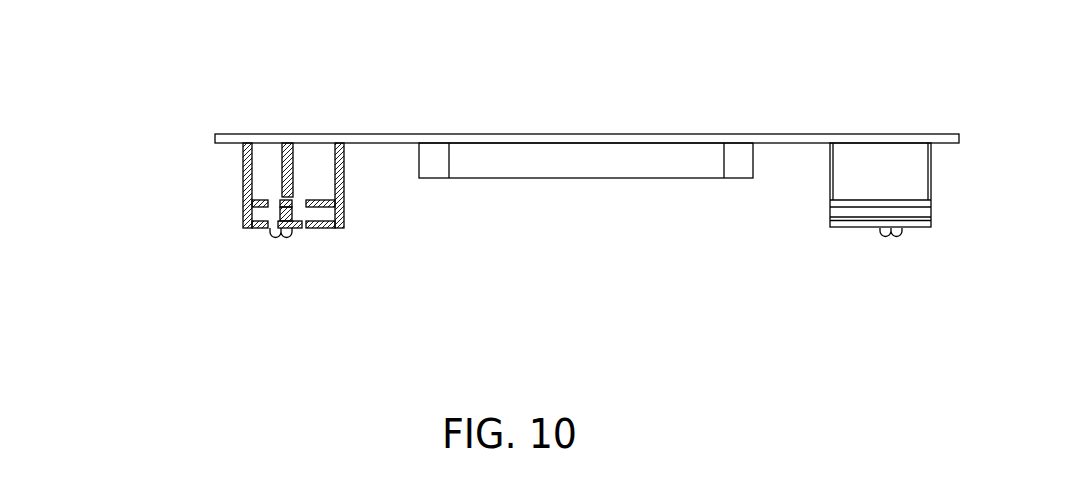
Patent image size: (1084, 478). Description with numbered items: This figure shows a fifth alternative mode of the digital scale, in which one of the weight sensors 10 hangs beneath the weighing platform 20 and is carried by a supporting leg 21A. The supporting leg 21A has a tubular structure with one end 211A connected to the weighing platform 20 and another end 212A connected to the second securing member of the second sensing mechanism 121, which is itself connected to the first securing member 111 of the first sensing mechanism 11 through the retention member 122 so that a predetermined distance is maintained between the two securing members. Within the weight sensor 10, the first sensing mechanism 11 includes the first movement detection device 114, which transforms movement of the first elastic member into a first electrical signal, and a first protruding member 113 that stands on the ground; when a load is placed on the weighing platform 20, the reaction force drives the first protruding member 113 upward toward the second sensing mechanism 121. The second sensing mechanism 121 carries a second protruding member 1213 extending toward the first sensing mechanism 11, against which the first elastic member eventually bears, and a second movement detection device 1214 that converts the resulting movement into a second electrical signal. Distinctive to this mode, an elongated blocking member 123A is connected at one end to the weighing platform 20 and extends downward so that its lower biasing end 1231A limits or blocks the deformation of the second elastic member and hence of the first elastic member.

The weight sensor 10 is at (291, 259).
The first sensing mechanism 11 is at (242, 234).
The weighing platform 20 is at (628, 138).
The supporting leg 21A is at (345, 183).
The first securing member 111 is at (243, 226).
The first protruding member 113 is at (897, 231).
The first movement detection device 114 is at (323, 229).
The second sensing mechanism 121 is at (243, 192).
The retention member 122 is at (243, 214).
The blocking member 123A is at (282, 185).
The one end of supporting leg 211A is at (241, 160).
The another end of supporting leg 212A is at (347, 202).
The second protruding member 1213 is at (312, 227).
The second movement detection device 1214 is at (317, 198).
The lower biasing end 1231A is at (273, 207).